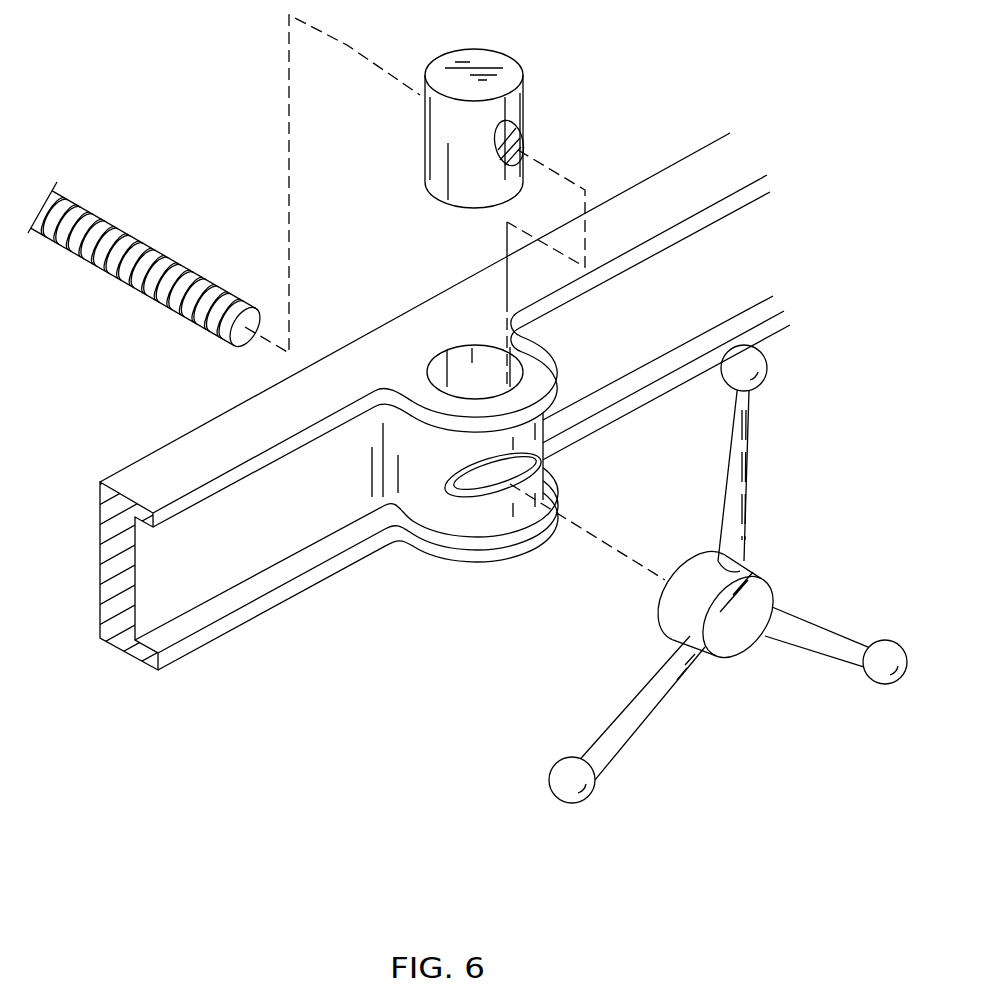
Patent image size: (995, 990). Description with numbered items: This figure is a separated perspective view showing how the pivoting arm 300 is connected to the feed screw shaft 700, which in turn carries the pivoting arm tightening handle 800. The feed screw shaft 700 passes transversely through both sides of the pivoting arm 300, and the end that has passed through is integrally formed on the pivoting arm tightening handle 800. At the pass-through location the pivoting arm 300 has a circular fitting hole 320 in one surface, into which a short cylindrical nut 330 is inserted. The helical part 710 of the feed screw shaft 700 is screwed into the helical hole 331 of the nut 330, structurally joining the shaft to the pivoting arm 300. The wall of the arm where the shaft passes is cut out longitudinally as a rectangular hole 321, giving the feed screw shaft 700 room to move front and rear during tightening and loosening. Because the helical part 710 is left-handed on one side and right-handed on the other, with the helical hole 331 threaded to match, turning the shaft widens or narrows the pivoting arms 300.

The pivoting arm 300 is at (223, 562).
The fitting hole 320 is at (460, 362).
The rectangular hole 321 is at (477, 483).
The nut 330 is at (485, 53).
The helical hole 331 is at (518, 137).
The feed screw shaft 700 is at (147, 264).
The helical part 710 is at (152, 248).
The pivoting arm tightening handle 800 is at (677, 686).